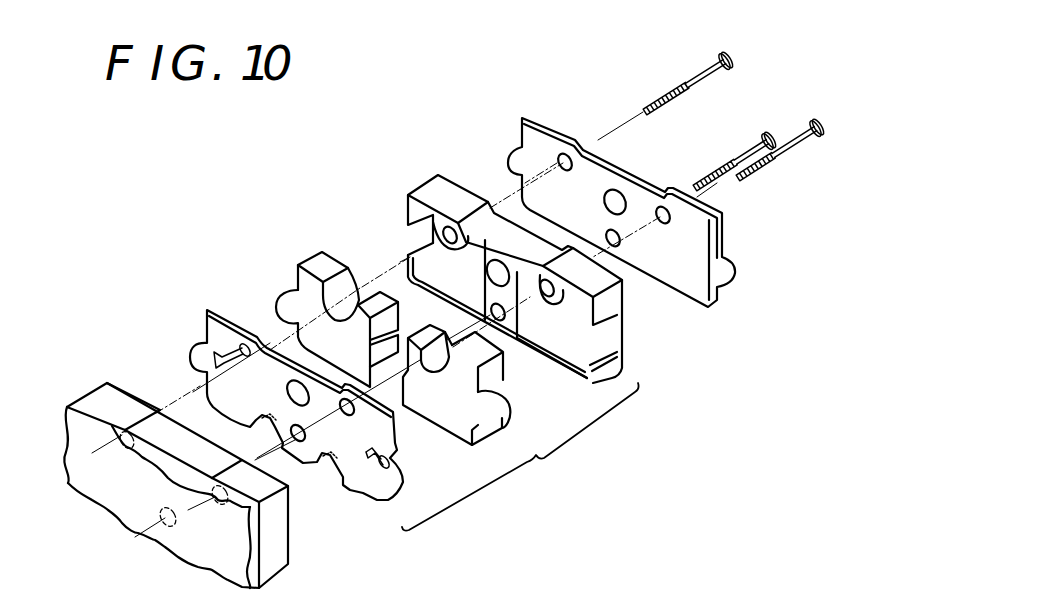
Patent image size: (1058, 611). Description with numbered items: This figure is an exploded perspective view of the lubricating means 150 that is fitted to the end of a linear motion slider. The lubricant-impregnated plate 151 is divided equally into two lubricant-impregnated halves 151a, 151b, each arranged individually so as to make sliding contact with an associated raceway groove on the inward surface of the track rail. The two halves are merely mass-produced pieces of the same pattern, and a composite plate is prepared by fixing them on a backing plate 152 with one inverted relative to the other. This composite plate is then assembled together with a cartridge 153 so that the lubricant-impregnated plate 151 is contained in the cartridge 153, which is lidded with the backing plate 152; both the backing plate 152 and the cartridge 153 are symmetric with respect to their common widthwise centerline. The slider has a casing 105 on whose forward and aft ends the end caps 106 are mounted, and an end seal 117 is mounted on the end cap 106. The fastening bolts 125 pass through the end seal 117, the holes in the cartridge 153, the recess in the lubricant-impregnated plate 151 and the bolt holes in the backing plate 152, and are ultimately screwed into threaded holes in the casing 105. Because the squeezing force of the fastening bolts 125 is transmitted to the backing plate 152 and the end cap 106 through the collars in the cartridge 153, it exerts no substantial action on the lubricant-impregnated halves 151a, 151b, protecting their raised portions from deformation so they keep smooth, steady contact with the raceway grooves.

The casing 105 is at (90, 415).
The end cap 106 is at (130, 410).
The end seal 117 is at (682, 263).
The fastening bolt 125 is at (702, 80).
The lubricating means 150 is at (520, 457).
The lubricant-impregnated plate 151 is at (300, 250).
The lubricant-impregnated half 151a is at (455, 418).
The lubricant-impregnated half 151b is at (331, 262).
The backing plate 152 is at (226, 330).
The cartridge 153 is at (441, 192).